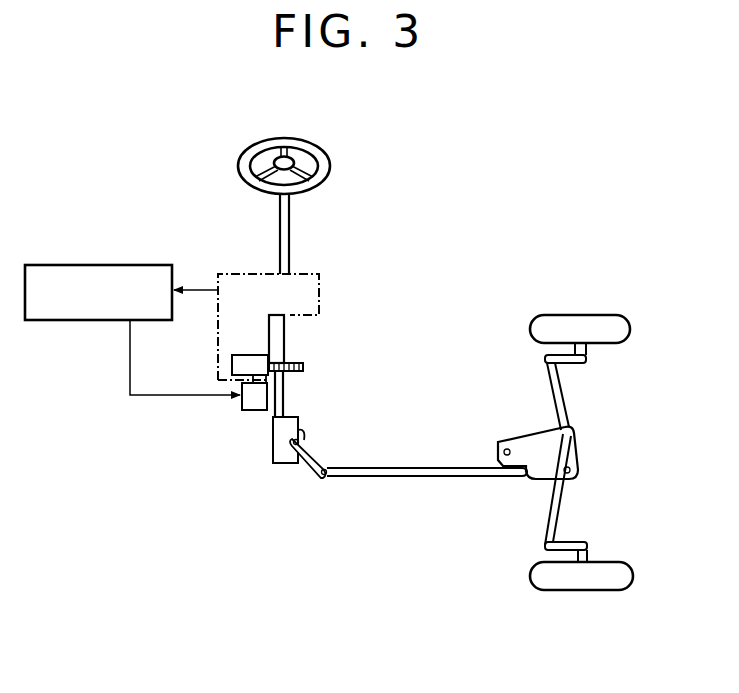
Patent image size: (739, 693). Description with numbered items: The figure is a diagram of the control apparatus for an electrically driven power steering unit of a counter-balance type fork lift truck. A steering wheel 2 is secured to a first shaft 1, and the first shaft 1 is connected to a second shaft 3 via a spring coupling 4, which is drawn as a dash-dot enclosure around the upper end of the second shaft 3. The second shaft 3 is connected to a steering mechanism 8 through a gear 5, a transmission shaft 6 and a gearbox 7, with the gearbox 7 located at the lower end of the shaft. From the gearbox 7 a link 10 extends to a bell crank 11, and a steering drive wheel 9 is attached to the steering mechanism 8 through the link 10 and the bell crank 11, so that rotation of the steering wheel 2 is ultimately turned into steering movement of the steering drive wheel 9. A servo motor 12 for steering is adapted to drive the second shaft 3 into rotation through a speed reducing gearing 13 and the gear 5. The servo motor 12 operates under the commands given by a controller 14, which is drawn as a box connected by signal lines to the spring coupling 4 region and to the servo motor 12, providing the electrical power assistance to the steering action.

The first shaft 1 is at (290, 218).
The steering wheel 2 is at (331, 154).
The second shaft 3 is at (285, 328).
The spring coupling 4 is at (320, 276).
The gear 5 is at (303, 364).
The transmission shaft 6 is at (285, 383).
The gearbox 7 is at (288, 465).
The steering mechanism 8 is at (431, 464).
The steering drive wheel 9 is at (577, 320).
The link 10 is at (436, 478).
The bell crank 11 is at (523, 445).
The servo motor 12 is at (252, 410).
The speed reducing gearing 13 is at (232, 364).
The controller 14 is at (118, 265).